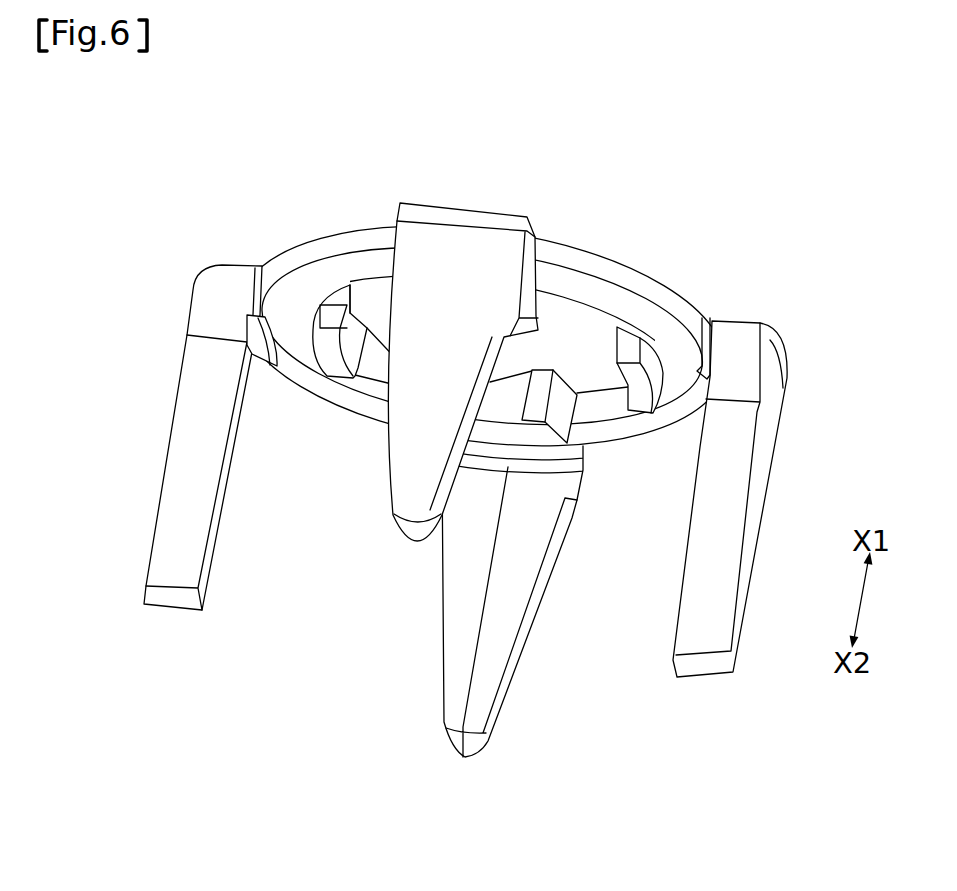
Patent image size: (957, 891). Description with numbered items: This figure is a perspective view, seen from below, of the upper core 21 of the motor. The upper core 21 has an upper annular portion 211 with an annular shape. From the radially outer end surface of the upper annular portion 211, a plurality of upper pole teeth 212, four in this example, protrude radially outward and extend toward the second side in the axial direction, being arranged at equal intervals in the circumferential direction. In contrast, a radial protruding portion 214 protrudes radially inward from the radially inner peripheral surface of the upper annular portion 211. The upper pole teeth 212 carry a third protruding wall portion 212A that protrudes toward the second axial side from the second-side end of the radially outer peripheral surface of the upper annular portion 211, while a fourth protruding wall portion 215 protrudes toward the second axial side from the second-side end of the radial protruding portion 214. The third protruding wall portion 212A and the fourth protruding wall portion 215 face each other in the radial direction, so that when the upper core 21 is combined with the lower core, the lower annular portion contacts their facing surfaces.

The upper core 21 is at (672, 233).
The upper annular portion 211 is at (311, 249).
The upper pole teeth 212 is at (180, 432).
The third protruding wall portion 212A is at (283, 363).
The radial protruding portion 214 is at (362, 337).
The fourth protruding wall portion 215 is at (323, 380).